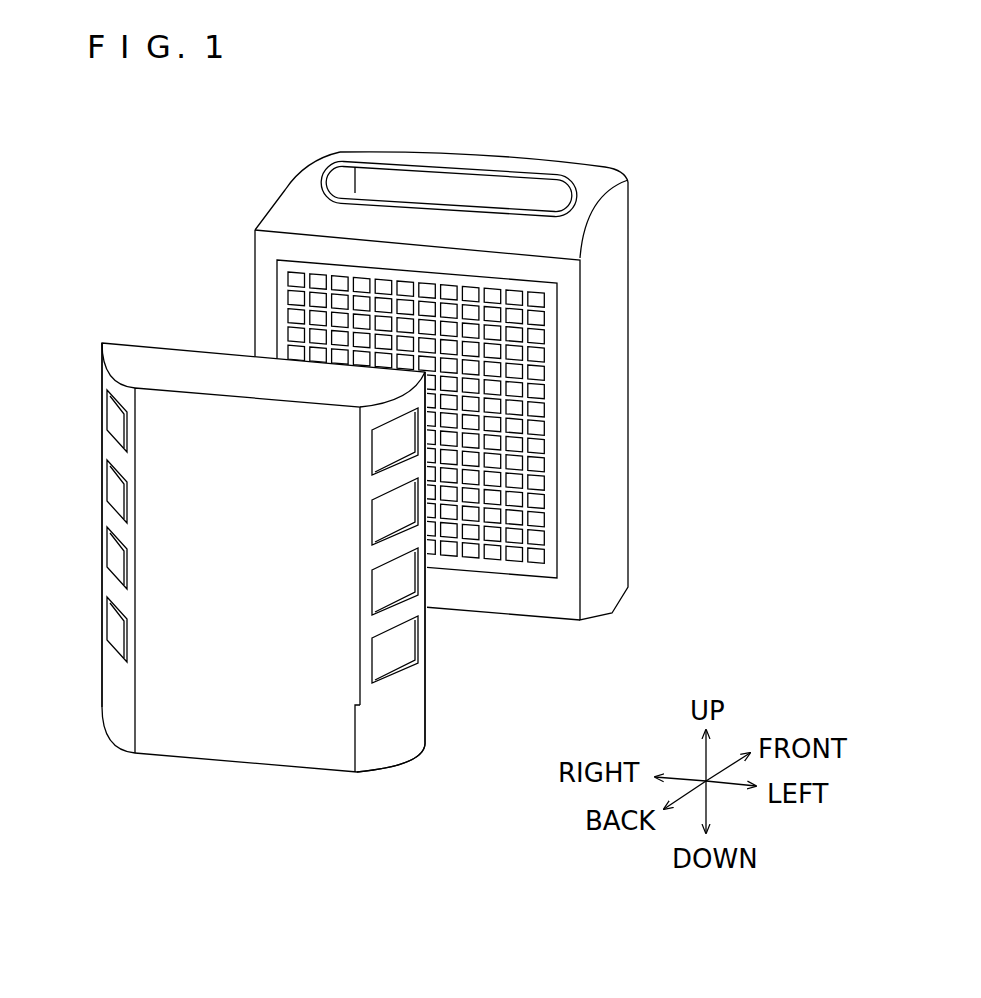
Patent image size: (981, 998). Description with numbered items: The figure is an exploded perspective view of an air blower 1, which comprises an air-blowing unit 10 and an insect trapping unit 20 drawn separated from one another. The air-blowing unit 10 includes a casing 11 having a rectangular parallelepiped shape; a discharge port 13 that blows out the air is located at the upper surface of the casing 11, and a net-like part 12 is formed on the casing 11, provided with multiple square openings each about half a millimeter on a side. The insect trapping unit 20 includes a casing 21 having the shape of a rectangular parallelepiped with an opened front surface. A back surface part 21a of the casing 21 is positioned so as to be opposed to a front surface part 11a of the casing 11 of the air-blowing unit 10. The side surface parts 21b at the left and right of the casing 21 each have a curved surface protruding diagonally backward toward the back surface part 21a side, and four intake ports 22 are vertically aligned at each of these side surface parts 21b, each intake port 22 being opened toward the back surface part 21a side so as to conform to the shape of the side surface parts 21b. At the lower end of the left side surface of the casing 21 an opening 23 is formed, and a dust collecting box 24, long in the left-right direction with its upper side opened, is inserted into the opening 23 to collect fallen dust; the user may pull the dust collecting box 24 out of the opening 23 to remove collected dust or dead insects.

The air blower 1 is at (750, 110).
The air-blowing unit 10 is at (562, 156).
The casing 11 is at (622, 328).
The front surface part 11a is at (597, 168).
The net-like part 12 is at (280, 290).
The discharge port 13 is at (453, 185).
The insect trapping unit 20 is at (292, 781).
The casing 21 is at (164, 762).
The back surface part 21a is at (232, 750).
The side surface part 21b is at (115, 682).
The intake port 22 is at (104, 478).
The opening 23 is at (368, 750).
The dust collecting box 24 is at (402, 750).